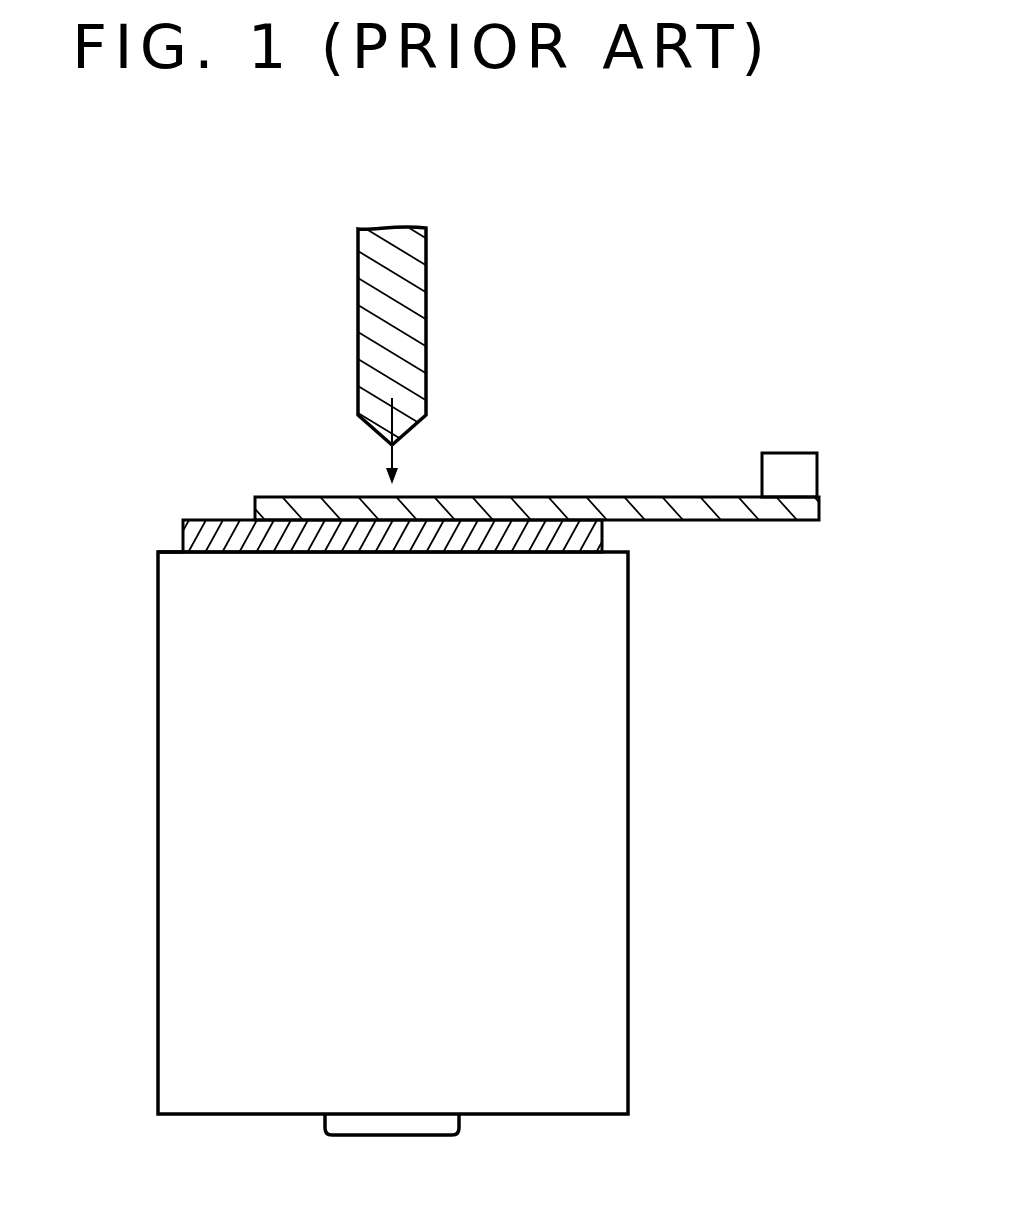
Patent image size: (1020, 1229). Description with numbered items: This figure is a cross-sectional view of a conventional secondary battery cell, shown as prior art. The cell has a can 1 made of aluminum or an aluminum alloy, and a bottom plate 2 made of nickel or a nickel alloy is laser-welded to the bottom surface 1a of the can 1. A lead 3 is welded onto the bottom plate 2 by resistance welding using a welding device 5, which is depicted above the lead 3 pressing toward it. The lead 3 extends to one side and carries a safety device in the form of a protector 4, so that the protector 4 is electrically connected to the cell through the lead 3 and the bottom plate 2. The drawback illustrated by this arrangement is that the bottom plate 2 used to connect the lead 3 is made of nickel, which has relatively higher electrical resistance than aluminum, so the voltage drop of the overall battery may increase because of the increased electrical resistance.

The can 1 is at (613, 832).
The bottom surface 1a is at (160, 552).
The bottom plate 2 is at (215, 519).
The lead 3 is at (646, 507).
The protector 4 is at (790, 468).
The welding device 5 is at (412, 332).